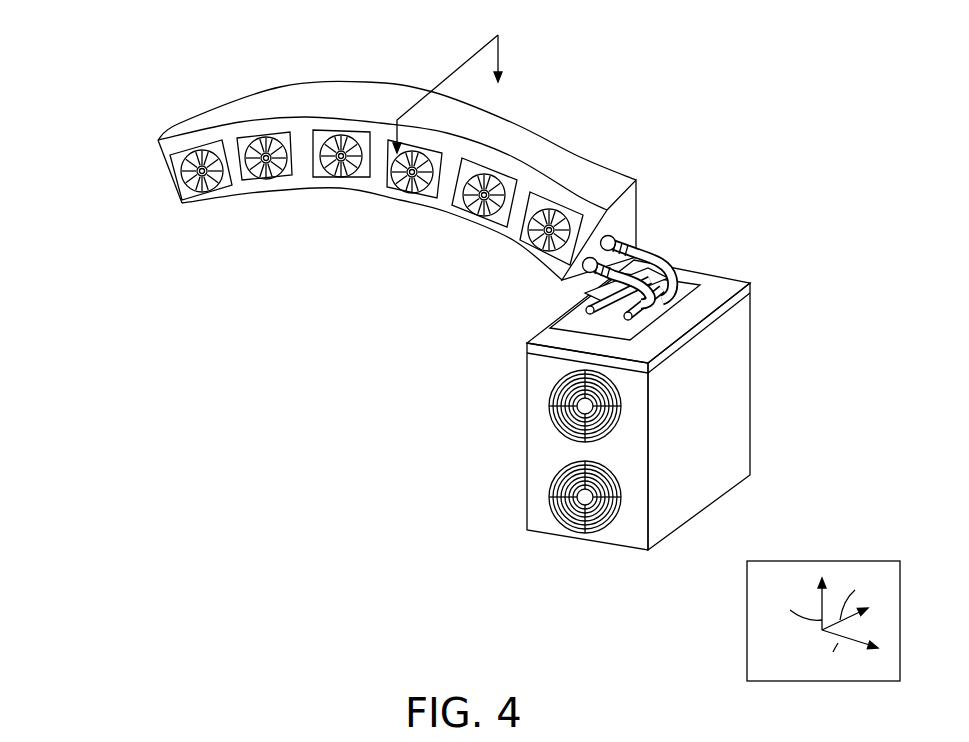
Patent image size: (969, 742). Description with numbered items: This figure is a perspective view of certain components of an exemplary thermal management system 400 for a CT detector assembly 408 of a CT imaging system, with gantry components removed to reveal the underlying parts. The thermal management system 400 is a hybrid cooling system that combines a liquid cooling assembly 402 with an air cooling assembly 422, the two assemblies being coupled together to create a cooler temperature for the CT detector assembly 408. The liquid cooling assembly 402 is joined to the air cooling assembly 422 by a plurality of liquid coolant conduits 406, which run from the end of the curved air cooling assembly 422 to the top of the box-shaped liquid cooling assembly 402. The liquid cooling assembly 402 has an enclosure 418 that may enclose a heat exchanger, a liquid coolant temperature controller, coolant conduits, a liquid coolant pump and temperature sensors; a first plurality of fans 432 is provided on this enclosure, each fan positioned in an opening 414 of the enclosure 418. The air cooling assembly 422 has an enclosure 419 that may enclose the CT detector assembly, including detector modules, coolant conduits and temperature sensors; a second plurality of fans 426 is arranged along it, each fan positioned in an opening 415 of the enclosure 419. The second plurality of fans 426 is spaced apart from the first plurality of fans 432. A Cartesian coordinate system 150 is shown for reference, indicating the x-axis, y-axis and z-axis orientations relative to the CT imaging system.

The thermal management system 400 is at (126, 348).
The liquid cooling assembly 402 is at (595, 545).
The liquid coolant conduits 406 is at (657, 252).
The CT detector assembly 408 is at (267, 84).
The opening 414 is at (613, 480).
The opening 415 is at (238, 192).
The enclosure 418 is at (752, 342).
The enclosure 419 is at (600, 175).
The air cooling assembly 422 is at (336, 198).
The second plurality of fans 426 is at (194, 203).
The first plurality of fans 432 is at (555, 515).
The Cartesian coordinate system 150 is at (806, 560).